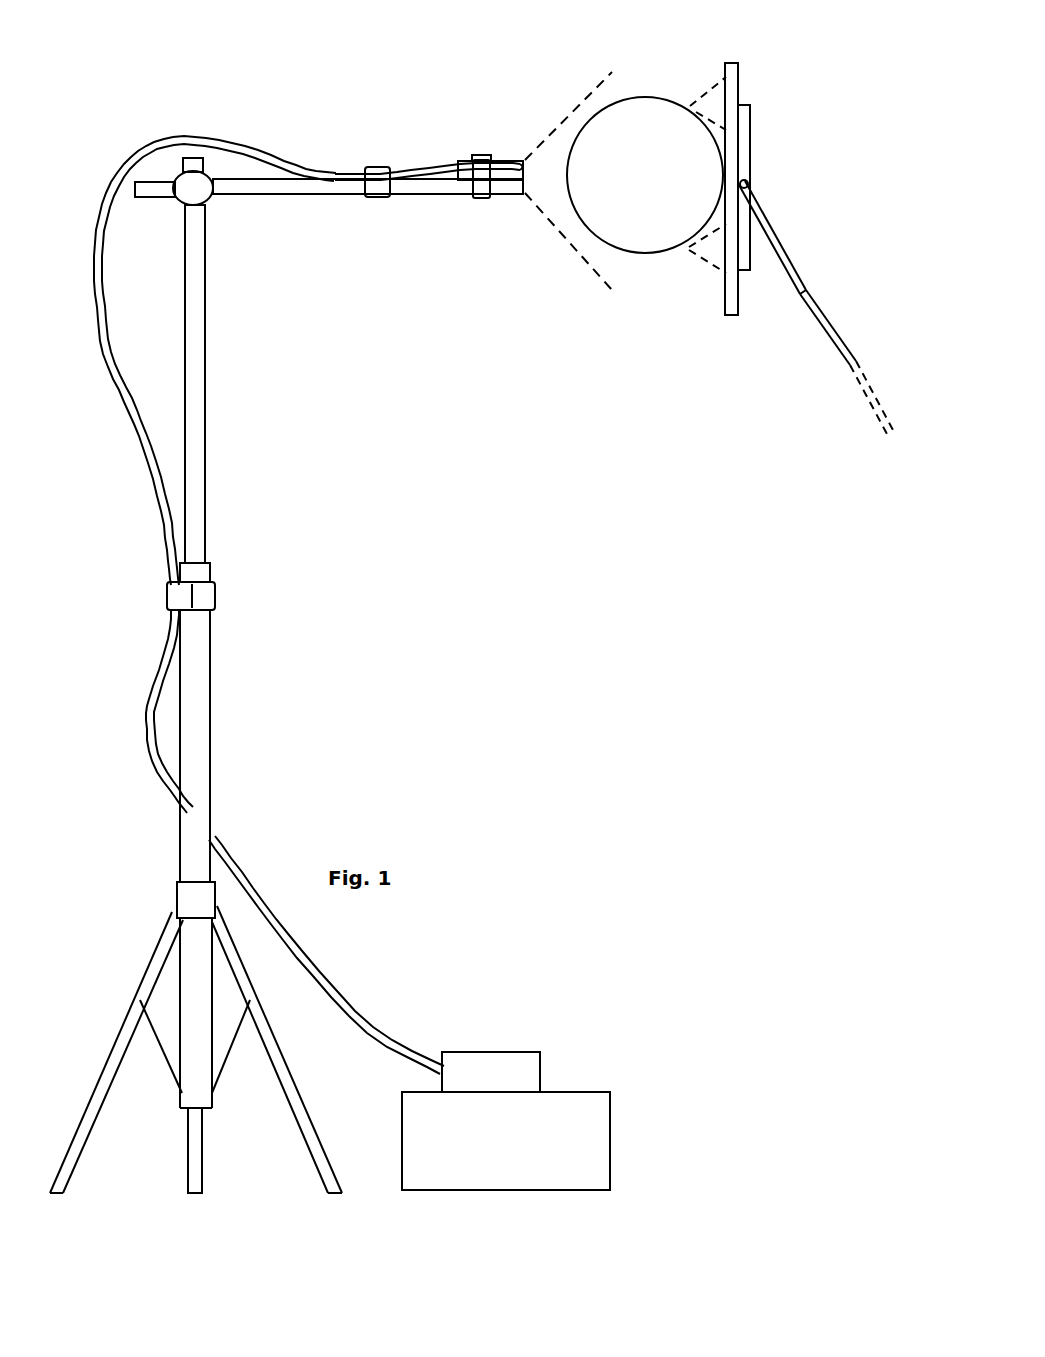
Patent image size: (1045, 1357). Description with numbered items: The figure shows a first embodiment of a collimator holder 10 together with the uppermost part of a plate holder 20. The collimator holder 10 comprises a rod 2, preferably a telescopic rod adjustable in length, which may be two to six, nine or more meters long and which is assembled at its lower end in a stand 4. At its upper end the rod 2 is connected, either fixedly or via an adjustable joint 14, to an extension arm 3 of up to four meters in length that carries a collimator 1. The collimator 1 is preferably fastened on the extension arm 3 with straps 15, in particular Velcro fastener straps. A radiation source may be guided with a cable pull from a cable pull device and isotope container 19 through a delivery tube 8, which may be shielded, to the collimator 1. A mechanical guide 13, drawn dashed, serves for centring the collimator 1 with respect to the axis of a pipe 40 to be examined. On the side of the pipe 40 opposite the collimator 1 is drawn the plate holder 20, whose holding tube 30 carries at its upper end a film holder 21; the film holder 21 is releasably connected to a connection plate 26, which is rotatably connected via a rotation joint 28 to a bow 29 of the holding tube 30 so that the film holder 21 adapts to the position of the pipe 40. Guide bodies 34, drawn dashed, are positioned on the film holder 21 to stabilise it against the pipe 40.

The collimator holder 10 is at (104, 50).
The collimator 1 is at (495, 124).
The rod 2 is at (247, 699).
The extension arm 3 is at (368, 221).
The stand 4 is at (196, 1049).
The delivery tube 8 is at (308, 607).
The guide 13 is at (556, 181).
The adjustable joint 14 is at (172, 201).
The Velcro fastener strap 15 is at (329, 384).
The cable pull device and isotope container 19 is at (501, 1103).
The plate holder 20 is at (859, 29).
The film holder 21 is at (771, 189).
The connection plate 26 is at (780, 187).
The rotation joint 28 is at (781, 192).
The bow 29 is at (795, 237).
The holding tube 30 is at (838, 362).
The guide body 34 is at (707, 187).
The pipe 40 is at (645, 152).